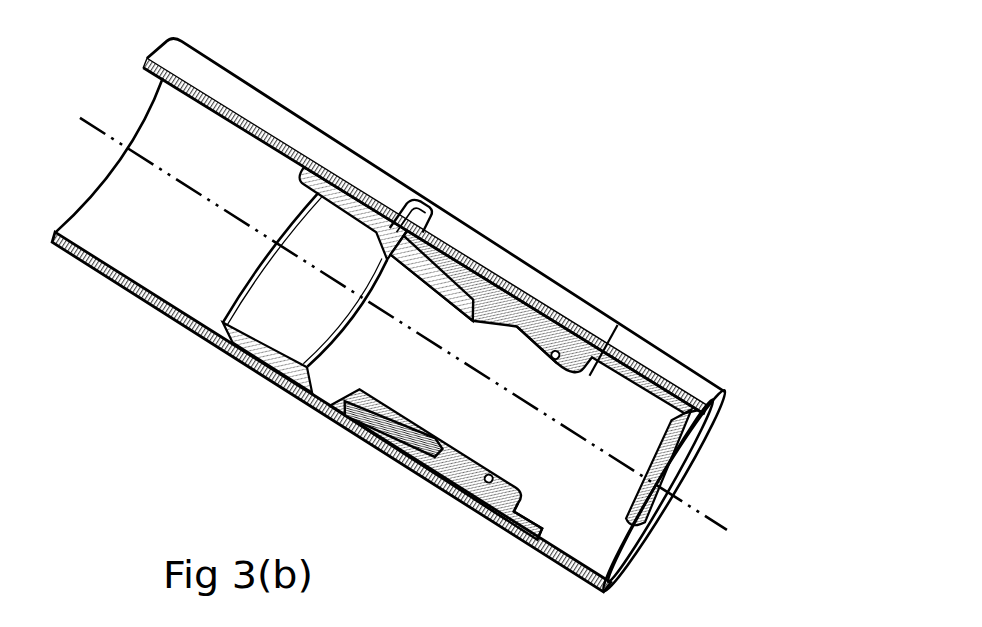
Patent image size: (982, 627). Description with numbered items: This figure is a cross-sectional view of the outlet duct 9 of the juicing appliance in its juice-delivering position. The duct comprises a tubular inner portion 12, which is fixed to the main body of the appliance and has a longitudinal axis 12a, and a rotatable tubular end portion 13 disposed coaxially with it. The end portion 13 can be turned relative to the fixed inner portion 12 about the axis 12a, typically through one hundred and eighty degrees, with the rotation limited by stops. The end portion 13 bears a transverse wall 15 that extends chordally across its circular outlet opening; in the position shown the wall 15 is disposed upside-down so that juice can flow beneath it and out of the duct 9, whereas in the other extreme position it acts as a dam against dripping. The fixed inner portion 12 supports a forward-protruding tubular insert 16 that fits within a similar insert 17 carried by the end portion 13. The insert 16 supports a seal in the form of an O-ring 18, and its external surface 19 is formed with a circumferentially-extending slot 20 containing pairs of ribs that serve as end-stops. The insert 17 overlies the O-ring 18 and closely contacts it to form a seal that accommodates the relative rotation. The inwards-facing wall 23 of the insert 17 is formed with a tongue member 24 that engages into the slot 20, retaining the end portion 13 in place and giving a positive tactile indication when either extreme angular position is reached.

The outlet duct 9 is at (441, 313).
The tubular inner portion 12 is at (287, 120).
The longitudinal axis 12a is at (434, 333).
The rotatable tubular end portion 13 is at (640, 340).
The transverse wall 15 is at (677, 464).
The tubular insert 16 is at (300, 306).
The insert 17 is at (487, 520).
The O-ring 18 is at (562, 354).
The external surface 19 is at (525, 330).
The circumferentially-extending slot 20 is at (468, 302).
The inwards-facing wall 23 is at (533, 540).
The tongue member 24 is at (420, 440).